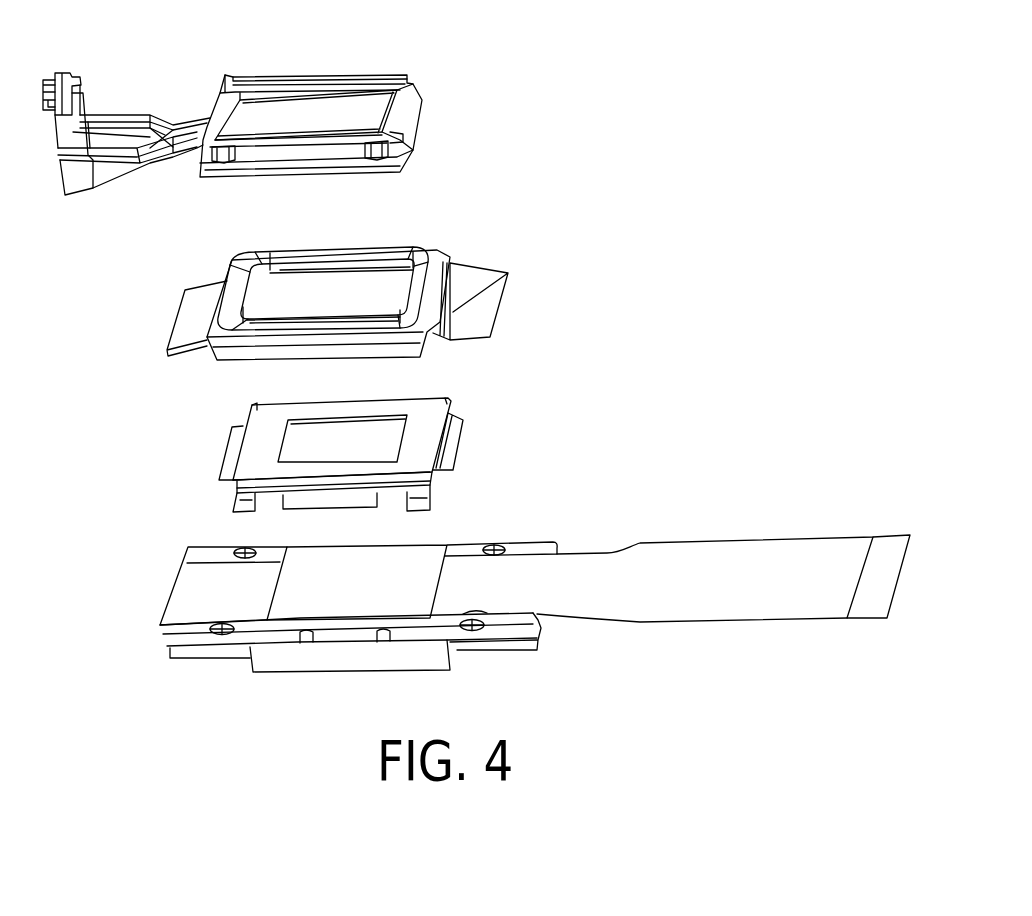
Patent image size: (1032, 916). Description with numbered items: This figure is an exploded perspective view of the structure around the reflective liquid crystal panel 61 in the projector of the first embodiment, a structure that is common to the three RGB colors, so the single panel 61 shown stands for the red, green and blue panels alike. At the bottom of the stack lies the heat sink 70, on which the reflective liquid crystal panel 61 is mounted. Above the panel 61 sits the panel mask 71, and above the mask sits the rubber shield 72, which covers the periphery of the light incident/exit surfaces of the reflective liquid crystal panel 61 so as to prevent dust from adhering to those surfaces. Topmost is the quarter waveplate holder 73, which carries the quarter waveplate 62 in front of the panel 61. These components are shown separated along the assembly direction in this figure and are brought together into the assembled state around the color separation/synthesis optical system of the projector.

The reflective liquid crystal panel 61 is at (390, 570).
The quarter waveplate 62 is at (287, 127).
The heat sink 70 is at (247, 600).
The panel mask 71 is at (420, 447).
The rubber shield 72 is at (453, 312).
The quarter waveplate holder 73 is at (402, 110).